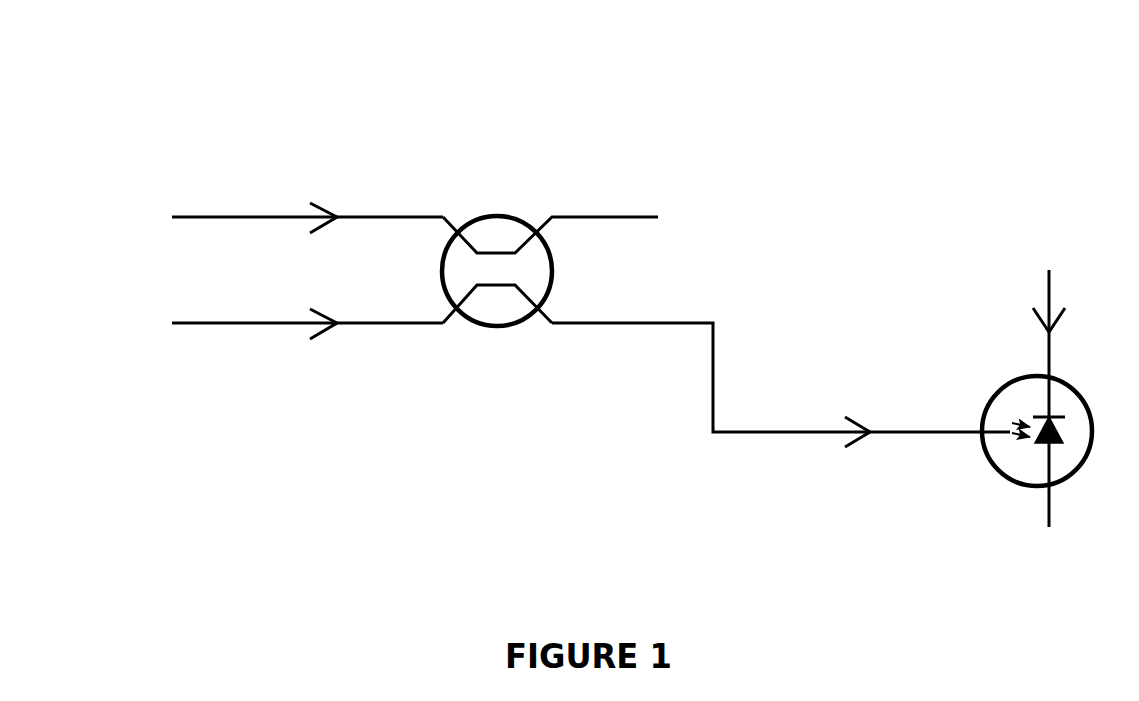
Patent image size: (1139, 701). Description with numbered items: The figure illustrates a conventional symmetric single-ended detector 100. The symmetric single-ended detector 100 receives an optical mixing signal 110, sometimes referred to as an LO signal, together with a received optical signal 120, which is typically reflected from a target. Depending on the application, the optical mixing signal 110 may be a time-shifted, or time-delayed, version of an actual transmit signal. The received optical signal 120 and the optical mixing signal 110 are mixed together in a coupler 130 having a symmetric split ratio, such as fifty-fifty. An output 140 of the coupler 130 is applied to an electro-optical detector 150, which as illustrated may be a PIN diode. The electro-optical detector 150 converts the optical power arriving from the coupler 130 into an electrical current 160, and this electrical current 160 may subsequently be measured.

The symmetric single-ended detector 100 is at (562, 555).
The optical mixing signal 110 is at (255, 187).
The received optical signal 120 is at (252, 355).
The coupler 130 is at (493, 120).
The output 140 is at (852, 377).
The electro-optical detector 150 is at (993, 512).
The electrical current 160 is at (1017, 263).